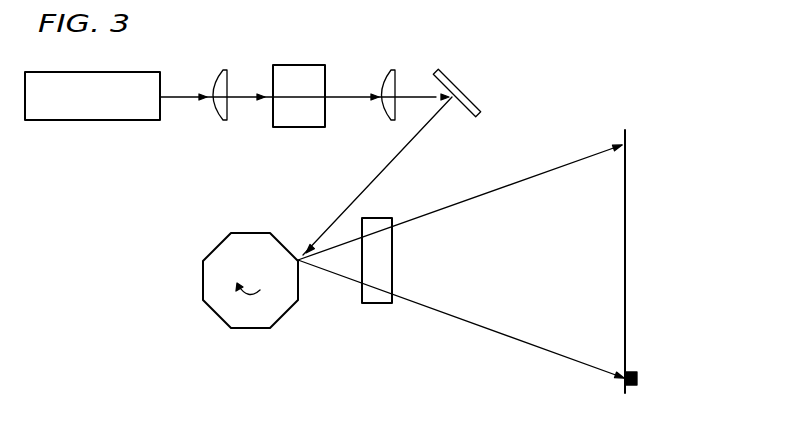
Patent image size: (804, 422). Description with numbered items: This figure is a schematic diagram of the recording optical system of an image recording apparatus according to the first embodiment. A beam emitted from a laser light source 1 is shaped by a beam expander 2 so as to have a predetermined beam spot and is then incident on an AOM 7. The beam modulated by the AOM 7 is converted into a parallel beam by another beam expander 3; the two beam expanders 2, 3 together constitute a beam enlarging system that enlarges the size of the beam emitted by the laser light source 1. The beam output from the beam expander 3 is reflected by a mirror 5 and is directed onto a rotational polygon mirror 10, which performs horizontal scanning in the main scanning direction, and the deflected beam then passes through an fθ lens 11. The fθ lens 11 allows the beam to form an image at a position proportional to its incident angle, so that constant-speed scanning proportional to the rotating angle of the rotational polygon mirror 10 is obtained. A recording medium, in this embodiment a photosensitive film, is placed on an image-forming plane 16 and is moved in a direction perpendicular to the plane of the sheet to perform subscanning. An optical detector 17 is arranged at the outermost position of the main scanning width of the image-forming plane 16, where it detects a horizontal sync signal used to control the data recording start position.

The laser light source 1 is at (143, 72).
The beam expander 2 is at (222, 71).
The AOM 7 is at (316, 65).
The beam expander 3 is at (402, 58).
The mirror 5 is at (452, 74).
The rotational polygon mirror 10 is at (222, 313).
The fθ lens 11 is at (373, 304).
The image-forming plane 16 is at (626, 221).
The optical detector 17 is at (639, 378).